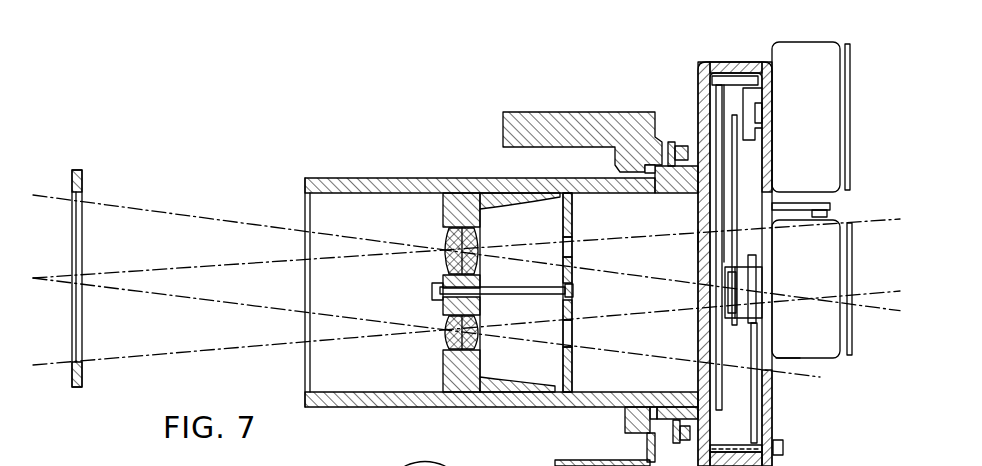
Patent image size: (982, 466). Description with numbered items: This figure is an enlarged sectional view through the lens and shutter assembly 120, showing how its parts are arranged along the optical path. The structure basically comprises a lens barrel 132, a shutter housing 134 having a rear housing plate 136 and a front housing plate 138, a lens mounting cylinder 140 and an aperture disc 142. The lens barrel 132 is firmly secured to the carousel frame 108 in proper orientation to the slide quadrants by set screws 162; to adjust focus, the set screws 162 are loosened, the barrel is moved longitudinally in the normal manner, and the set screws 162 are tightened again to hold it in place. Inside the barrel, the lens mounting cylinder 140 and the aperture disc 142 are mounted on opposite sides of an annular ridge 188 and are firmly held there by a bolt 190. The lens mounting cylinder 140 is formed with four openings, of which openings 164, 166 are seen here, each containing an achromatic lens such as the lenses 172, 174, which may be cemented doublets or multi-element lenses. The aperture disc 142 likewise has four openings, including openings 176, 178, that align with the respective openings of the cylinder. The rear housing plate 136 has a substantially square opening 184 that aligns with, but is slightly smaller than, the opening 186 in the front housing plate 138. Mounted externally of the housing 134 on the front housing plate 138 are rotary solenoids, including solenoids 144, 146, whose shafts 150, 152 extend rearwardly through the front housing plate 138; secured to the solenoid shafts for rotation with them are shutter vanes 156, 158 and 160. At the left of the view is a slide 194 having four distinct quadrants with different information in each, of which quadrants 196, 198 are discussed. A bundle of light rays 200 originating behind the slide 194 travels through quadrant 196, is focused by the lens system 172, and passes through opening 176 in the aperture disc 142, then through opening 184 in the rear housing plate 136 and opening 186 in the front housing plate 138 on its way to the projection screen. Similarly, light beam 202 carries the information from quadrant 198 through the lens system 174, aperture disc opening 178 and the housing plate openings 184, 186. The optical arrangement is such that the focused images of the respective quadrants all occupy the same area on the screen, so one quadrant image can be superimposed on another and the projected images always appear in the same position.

The carousel frame 108 is at (548, 112).
The lens and shutter assembly 120 is at (501, 241).
The lens barrel 132 is at (654, 233).
The shutter housing 134 is at (392, 178).
The rear housing plate 136 is at (741, 251).
The front housing plate 138 is at (773, 412).
The lens mounting cylinder 140 is at (443, 212).
The aperture disc 142 is at (559, 292).
The rotary solenoid 144 is at (806, 45).
The rotary solenoid 146 is at (837, 287).
The shaft 150 is at (762, 140).
The shaft 152 is at (764, 272).
The shutter vane 156 is at (717, 248).
The shutter vane 158 is at (750, 395).
The shutter vane 160 is at (737, 180).
The set screws 162 is at (660, 259).
The opening 164 is at (460, 246).
The opening 166 is at (487, 332).
The lens system 172 is at (480, 256).
The lens system 174 is at (480, 322).
The opening 176 is at (572, 250).
The opening 178 is at (572, 332).
The opening 184 is at (697, 240).
The opening 186 is at (776, 352).
The annular ridge 188 is at (552, 378).
The bolt 190 is at (522, 289).
The slide 194 is at (72, 255).
The quadrant 196 is at (72, 228).
The quadrant 198 is at (72, 298).
The bundle of light rays 200 is at (190, 216).
The light beam 202 is at (190, 298).